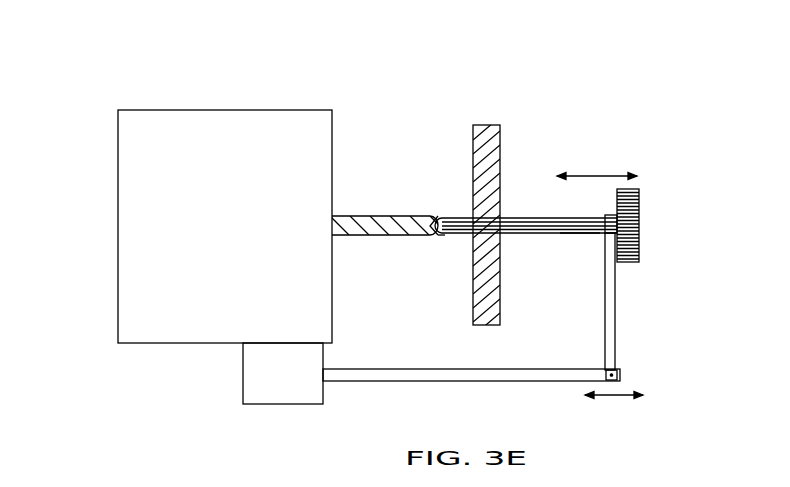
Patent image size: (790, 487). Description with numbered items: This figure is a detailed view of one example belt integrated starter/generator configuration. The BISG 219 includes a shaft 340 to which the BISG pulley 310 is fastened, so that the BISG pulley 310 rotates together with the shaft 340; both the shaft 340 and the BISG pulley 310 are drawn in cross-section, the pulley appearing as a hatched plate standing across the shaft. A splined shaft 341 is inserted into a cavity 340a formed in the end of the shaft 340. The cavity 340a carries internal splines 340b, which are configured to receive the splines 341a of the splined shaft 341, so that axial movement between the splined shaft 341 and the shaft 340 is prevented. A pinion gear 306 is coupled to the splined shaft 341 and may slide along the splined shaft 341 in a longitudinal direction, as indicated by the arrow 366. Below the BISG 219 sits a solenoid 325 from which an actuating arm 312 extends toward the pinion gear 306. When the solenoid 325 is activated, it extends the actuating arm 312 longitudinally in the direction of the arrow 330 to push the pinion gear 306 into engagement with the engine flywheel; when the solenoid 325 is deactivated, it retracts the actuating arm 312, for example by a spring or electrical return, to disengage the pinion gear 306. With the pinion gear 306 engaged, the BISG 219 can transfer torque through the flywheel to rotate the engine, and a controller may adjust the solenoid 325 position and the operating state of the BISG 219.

The BISG 219 is at (156, 126).
The solenoid 325 is at (278, 383).
The actuating arm 312 is at (383, 381).
The arrow 330 is at (628, 393).
The shaft 340 is at (370, 216).
The cavity 340a is at (437, 217).
The internal splines 340b is at (448, 236).
The splined shaft 341 is at (528, 217).
The splines 341a is at (585, 236).
The BISG pulley 310 is at (500, 125).
The pinion gear 306 is at (625, 228).
The arrow 366 is at (597, 172).